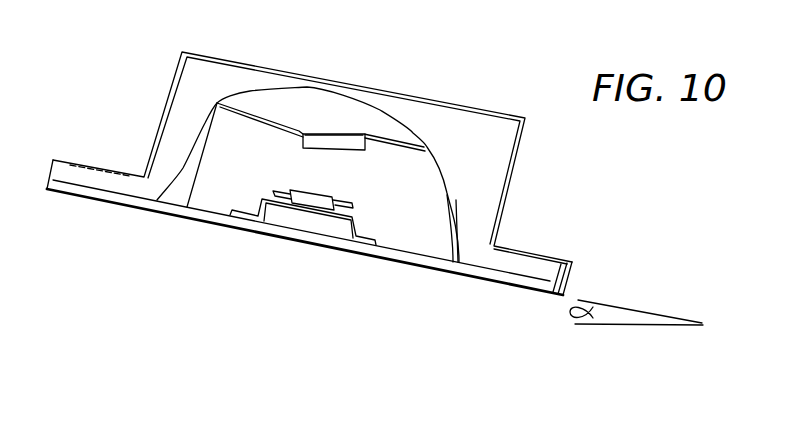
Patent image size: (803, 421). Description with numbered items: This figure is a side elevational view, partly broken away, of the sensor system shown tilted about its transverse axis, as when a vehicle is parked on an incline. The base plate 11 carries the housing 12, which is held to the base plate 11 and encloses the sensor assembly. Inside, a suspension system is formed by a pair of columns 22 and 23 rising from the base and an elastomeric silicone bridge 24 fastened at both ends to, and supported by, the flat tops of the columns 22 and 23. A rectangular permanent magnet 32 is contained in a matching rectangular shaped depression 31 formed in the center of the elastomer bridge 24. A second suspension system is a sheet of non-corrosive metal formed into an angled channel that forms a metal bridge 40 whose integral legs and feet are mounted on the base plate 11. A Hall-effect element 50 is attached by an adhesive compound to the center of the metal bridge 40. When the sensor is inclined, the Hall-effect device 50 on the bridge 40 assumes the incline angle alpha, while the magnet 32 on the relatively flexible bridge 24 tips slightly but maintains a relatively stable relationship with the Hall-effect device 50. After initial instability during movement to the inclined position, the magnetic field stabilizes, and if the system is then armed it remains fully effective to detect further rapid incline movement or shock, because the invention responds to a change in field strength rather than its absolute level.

The base plate 11 is at (112, 200).
The housing 12 is at (162, 104).
The column 22 is at (190, 168).
The column 23 is at (447, 218).
The elastomeric silicone bridge 24 is at (250, 113).
The rectangular shaped depression 31 is at (333, 137).
The permanent magnet 32 is at (316, 133).
The metal bridge 40 is at (329, 214).
The Hall-effect element 50 is at (308, 193).